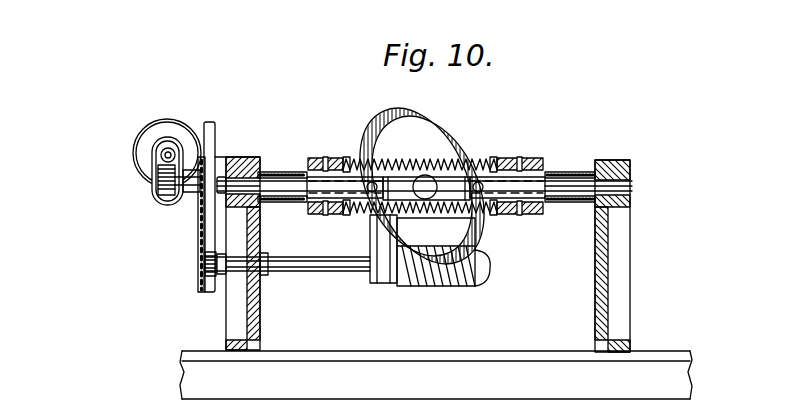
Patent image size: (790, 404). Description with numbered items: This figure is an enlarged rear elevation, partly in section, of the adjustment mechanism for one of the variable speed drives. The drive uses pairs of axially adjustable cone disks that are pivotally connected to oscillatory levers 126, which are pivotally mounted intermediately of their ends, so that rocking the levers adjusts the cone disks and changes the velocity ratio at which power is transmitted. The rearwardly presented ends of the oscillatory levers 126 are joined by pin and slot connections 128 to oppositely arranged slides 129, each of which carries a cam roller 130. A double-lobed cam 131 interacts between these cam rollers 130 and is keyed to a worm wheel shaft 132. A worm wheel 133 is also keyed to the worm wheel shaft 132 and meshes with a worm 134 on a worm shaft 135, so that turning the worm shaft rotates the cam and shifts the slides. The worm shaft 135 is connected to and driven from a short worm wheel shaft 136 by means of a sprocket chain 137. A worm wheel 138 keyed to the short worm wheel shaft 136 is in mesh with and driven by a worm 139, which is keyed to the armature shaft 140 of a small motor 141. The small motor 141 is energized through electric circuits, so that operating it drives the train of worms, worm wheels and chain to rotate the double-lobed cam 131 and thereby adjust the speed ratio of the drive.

The oscillatory lever 126 is at (342, 160).
The pin and slot connection 128 is at (330, 157).
The slide 129 is at (313, 177).
The cam roller 130 is at (352, 208).
The double-lobed cam 131 is at (398, 123).
The worm wheel shaft 132 is at (458, 180).
The worm wheel 133 is at (473, 144).
The worm 134 is at (440, 287).
The worm shaft 135 is at (330, 268).
The short worm wheel shaft 136 is at (188, 192).
The sprocket chain 137 is at (200, 232).
The worm wheel 138 is at (160, 203).
The worm 139 is at (167, 148).
The armature shaft 140 is at (175, 147).
The small motor 141 is at (139, 152).